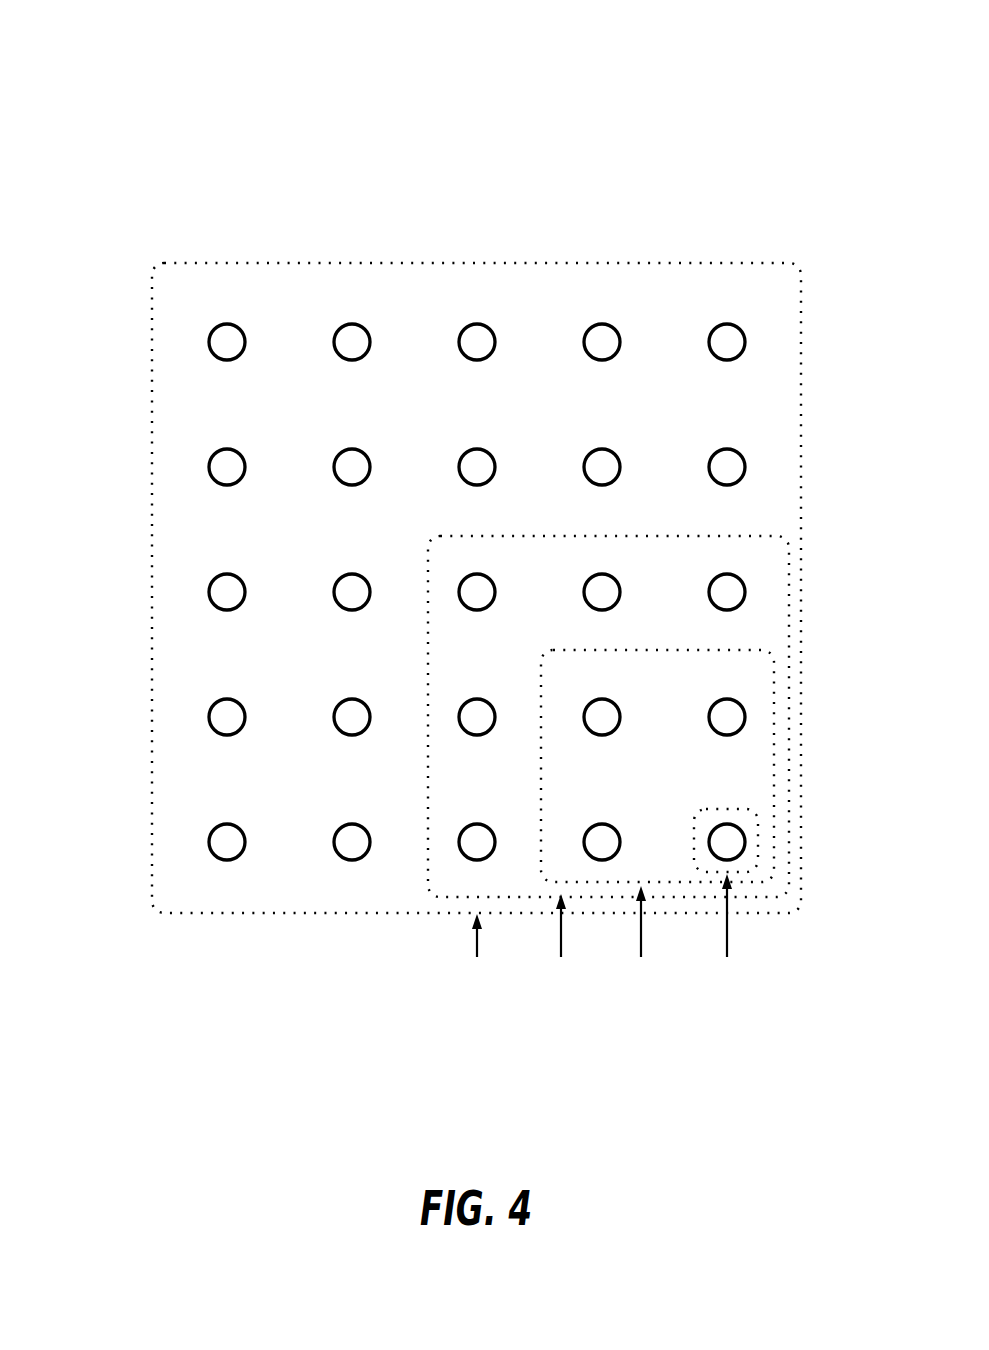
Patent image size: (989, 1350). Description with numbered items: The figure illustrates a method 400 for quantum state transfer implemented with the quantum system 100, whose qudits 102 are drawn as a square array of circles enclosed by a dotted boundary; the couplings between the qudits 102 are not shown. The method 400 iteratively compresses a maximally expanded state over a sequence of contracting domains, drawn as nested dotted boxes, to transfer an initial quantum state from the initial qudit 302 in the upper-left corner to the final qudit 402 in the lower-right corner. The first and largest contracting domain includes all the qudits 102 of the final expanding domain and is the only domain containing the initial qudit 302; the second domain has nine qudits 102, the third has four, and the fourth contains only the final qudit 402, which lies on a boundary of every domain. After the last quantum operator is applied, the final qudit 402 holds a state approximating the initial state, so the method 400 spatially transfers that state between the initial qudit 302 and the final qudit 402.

The method 400 is at (101, 59).
The quantum system 100 is at (695, 206).
The initial qudit 302 is at (209, 342).
The qudits 102 is at (715, 356).
The final qudit 402 is at (745, 841).